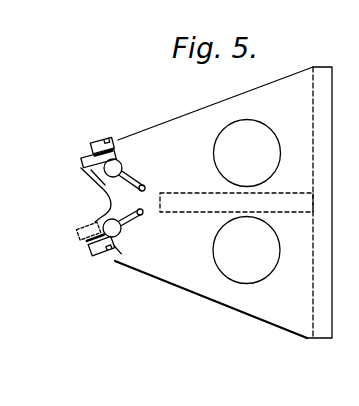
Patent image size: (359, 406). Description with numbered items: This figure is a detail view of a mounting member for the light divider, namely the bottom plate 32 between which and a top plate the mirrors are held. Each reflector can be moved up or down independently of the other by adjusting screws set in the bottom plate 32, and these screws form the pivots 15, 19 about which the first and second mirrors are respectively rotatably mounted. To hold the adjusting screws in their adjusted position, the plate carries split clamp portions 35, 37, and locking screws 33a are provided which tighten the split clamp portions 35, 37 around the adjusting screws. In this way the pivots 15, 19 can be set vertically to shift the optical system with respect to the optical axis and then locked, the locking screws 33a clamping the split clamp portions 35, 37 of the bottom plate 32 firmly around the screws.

The bottom plate 32 is at (263, 308).
The locking screws 33a is at (104, 137).
The split clamp portion 35 is at (92, 147).
The split clamp portion 37 is at (95, 253).
The pivot 15 is at (120, 166).
The pivot 19 is at (117, 236).